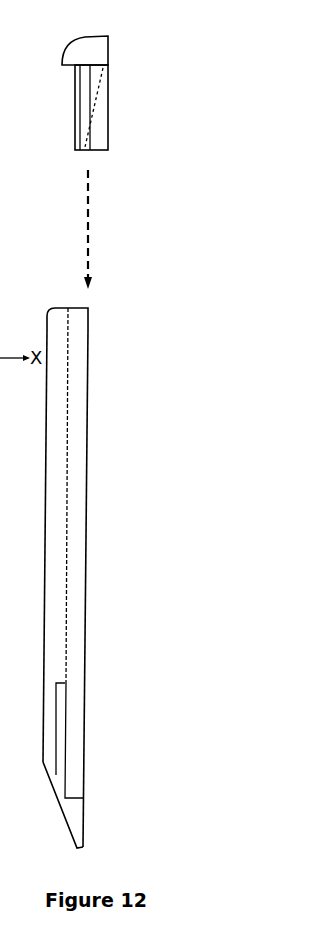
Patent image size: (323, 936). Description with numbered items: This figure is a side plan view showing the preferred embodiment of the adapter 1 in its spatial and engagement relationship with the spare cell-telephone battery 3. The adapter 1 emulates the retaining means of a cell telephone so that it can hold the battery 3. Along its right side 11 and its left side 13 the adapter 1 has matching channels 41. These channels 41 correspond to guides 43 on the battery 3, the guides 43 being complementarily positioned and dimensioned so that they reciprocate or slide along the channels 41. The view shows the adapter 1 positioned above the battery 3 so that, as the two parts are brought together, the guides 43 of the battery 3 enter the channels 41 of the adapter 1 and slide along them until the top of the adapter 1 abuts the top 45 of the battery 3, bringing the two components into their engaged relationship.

The adapter 1 is at (2, 82).
The left side 13 is at (0, 108).
The right side 11 is at (64, 128).
The channels 41 is at (86, 148).
The top of battery 45 is at (96, 297).
The spare cell-telephone battery 3 is at (73, 556).
The guides 43 is at (44, 588).